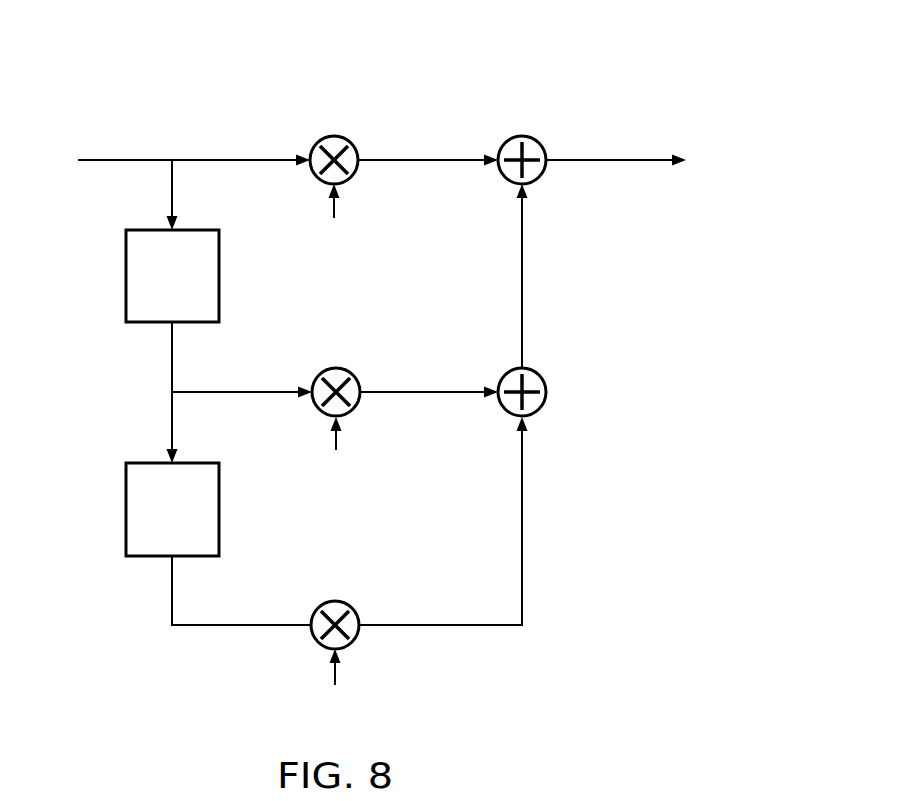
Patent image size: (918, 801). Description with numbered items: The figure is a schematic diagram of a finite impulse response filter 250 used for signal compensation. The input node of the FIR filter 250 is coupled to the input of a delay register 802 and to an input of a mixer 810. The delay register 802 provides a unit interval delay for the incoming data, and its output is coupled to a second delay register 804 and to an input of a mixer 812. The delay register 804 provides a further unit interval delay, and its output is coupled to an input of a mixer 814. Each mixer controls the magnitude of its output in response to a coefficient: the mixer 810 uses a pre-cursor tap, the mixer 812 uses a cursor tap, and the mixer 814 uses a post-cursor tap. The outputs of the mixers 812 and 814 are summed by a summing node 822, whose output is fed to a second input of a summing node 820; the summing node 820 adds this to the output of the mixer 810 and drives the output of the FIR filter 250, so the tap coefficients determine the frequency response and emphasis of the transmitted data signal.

The FIR filter 250 is at (680, 62).
The delay register 802 is at (126, 277).
The delay register 804 is at (126, 509).
The mixer 810 is at (318, 143).
The mixer 812 is at (320, 375).
The mixer 814 is at (319, 607).
The summing node 820 is at (506, 143).
The summing node 822 is at (506, 375).